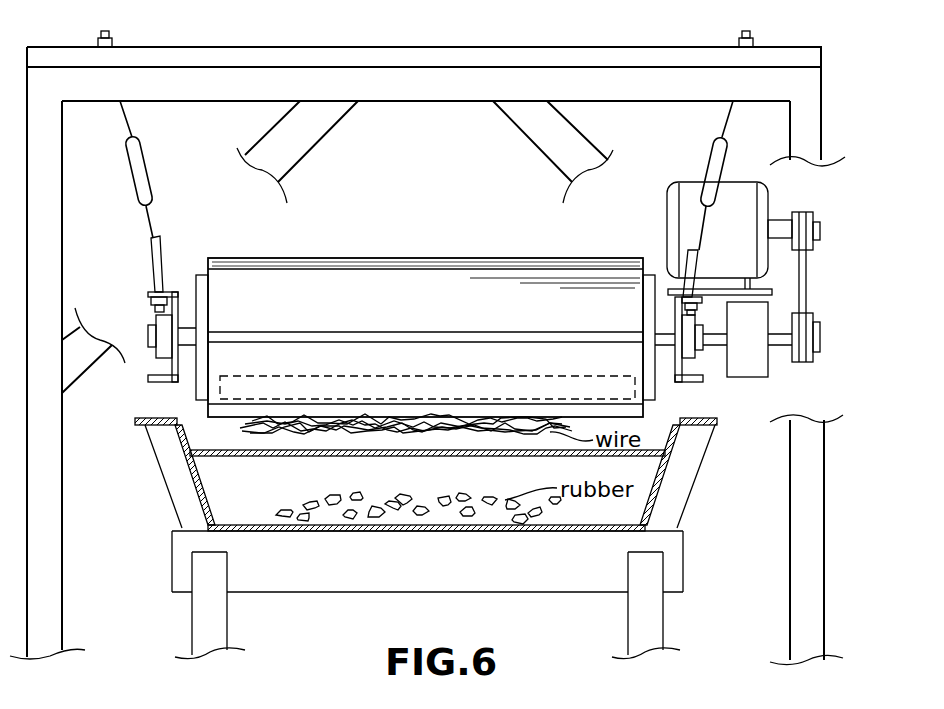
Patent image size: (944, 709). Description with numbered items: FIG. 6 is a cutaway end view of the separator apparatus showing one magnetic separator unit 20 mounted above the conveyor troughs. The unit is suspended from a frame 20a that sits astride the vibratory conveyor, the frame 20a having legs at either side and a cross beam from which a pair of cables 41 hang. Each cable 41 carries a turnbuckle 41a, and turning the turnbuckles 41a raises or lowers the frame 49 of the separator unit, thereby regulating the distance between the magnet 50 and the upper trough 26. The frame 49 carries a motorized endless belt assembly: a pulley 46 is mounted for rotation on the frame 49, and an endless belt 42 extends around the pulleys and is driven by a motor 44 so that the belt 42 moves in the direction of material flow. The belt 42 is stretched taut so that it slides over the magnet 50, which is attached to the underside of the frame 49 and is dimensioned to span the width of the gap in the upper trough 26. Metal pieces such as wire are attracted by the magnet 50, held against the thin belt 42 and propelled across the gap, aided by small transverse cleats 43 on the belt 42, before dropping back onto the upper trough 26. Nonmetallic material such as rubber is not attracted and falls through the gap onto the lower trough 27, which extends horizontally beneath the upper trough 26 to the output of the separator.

The magnetic separator unit 20 is at (432, 228).
The frame 20a is at (821, 85).
The upper trough 26 is at (438, 464).
The lower trough 27 is at (438, 539).
The cable 41 is at (147, 222).
The turnbuckle 41a is at (147, 170).
The endless belt 42 is at (268, 296).
The transverse cleat 43 is at (503, 258).
The motor 44 is at (770, 200).
The pulley 46 is at (657, 275).
The frame 49 is at (178, 293).
The magnet 50 is at (413, 376).